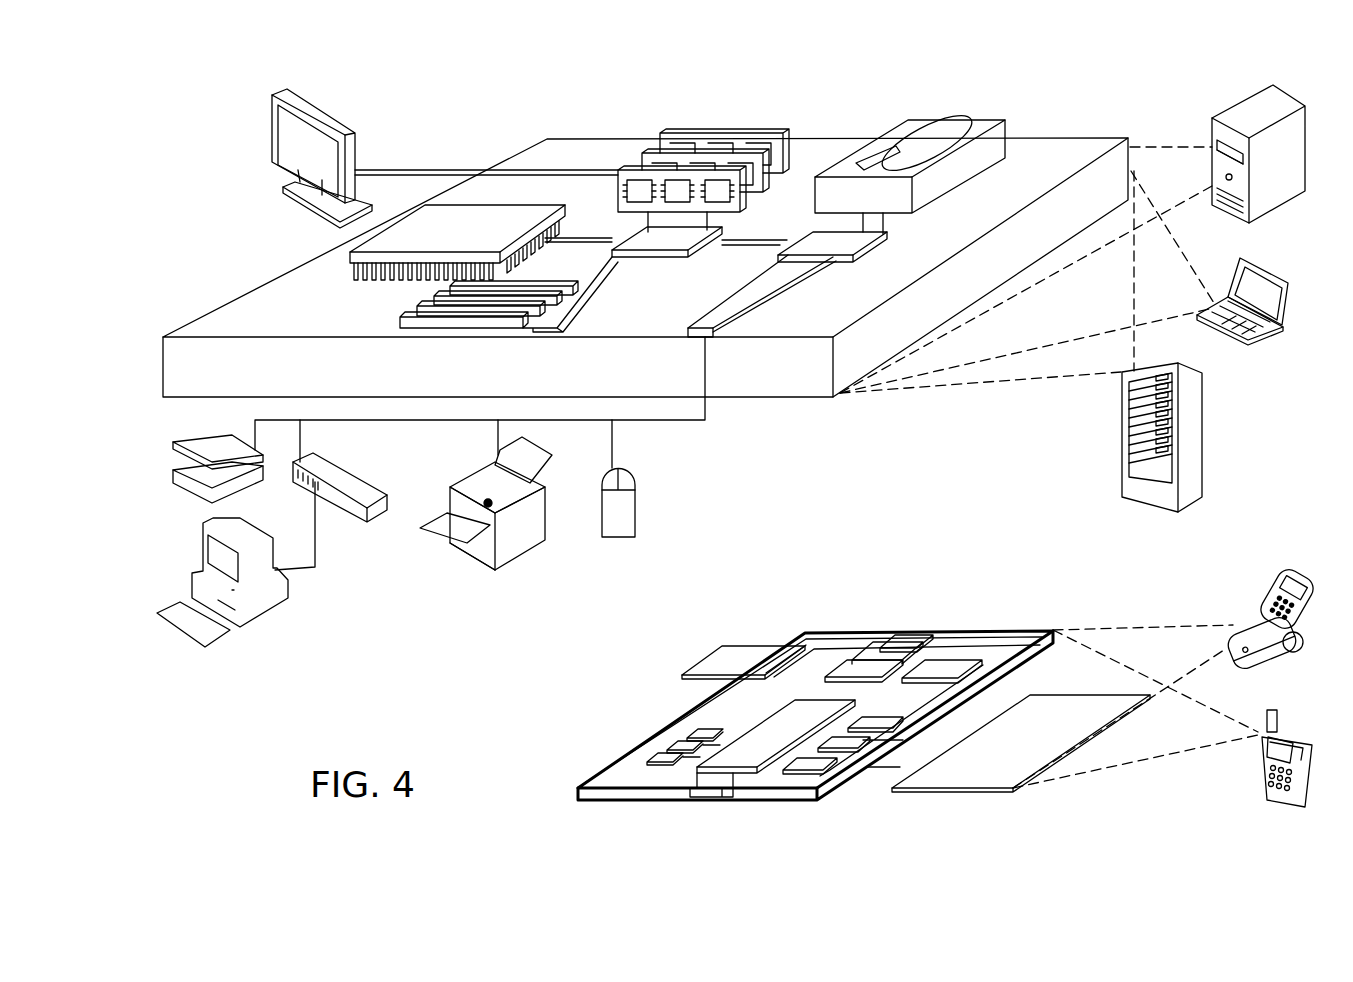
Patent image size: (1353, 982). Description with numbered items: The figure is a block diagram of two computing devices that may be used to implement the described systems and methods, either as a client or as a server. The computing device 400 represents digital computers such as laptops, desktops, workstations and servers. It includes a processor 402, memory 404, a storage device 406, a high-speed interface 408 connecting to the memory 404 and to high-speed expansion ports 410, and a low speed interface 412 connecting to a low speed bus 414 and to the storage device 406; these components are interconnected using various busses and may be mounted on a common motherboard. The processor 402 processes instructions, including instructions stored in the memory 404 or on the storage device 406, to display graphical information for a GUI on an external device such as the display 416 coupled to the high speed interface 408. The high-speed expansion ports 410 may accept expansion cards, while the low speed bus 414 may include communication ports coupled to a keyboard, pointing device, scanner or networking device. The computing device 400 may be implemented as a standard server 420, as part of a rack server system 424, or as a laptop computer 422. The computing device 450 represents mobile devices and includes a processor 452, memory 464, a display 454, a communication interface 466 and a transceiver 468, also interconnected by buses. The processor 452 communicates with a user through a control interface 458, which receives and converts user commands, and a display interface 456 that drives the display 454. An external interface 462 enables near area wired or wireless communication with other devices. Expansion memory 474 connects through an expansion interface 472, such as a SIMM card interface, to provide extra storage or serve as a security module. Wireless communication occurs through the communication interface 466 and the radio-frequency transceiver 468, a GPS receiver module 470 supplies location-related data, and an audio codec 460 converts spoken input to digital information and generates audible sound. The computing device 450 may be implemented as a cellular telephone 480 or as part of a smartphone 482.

The computing device 400 is at (467, 110).
The processor 402 is at (318, 259).
The memory 404 is at (668, 134).
The storage device 406 is at (896, 118).
The high-speed interface 408 is at (653, 238).
The high-speed expansion ports 410 is at (442, 302).
The low speed interface 412 is at (833, 244).
The low speed bus 414 is at (703, 342).
The display 416 is at (273, 97).
The standard server 420 is at (1214, 128).
The laptop computer 422 is at (1250, 266).
The rack server system 424 is at (1122, 458).
The computing device 450 is at (794, 602).
The processor 452 is at (752, 782).
The display 454 is at (1013, 788).
The display interface 456 is at (824, 775).
The control interface 458 is at (880, 745).
The audio codec 460 is at (905, 752).
The external interface 462 is at (717, 788).
The memory 464 is at (668, 752).
The communication interface 466 is at (866, 668).
The transceiver 468 is at (940, 668).
The GPS receiver module 470 is at (917, 634).
The expansion interface 472 is at (780, 640).
The expansion memory 474 is at (718, 646).
The cellular telephone 480 is at (1290, 576).
The smartphone 482 is at (1270, 712).